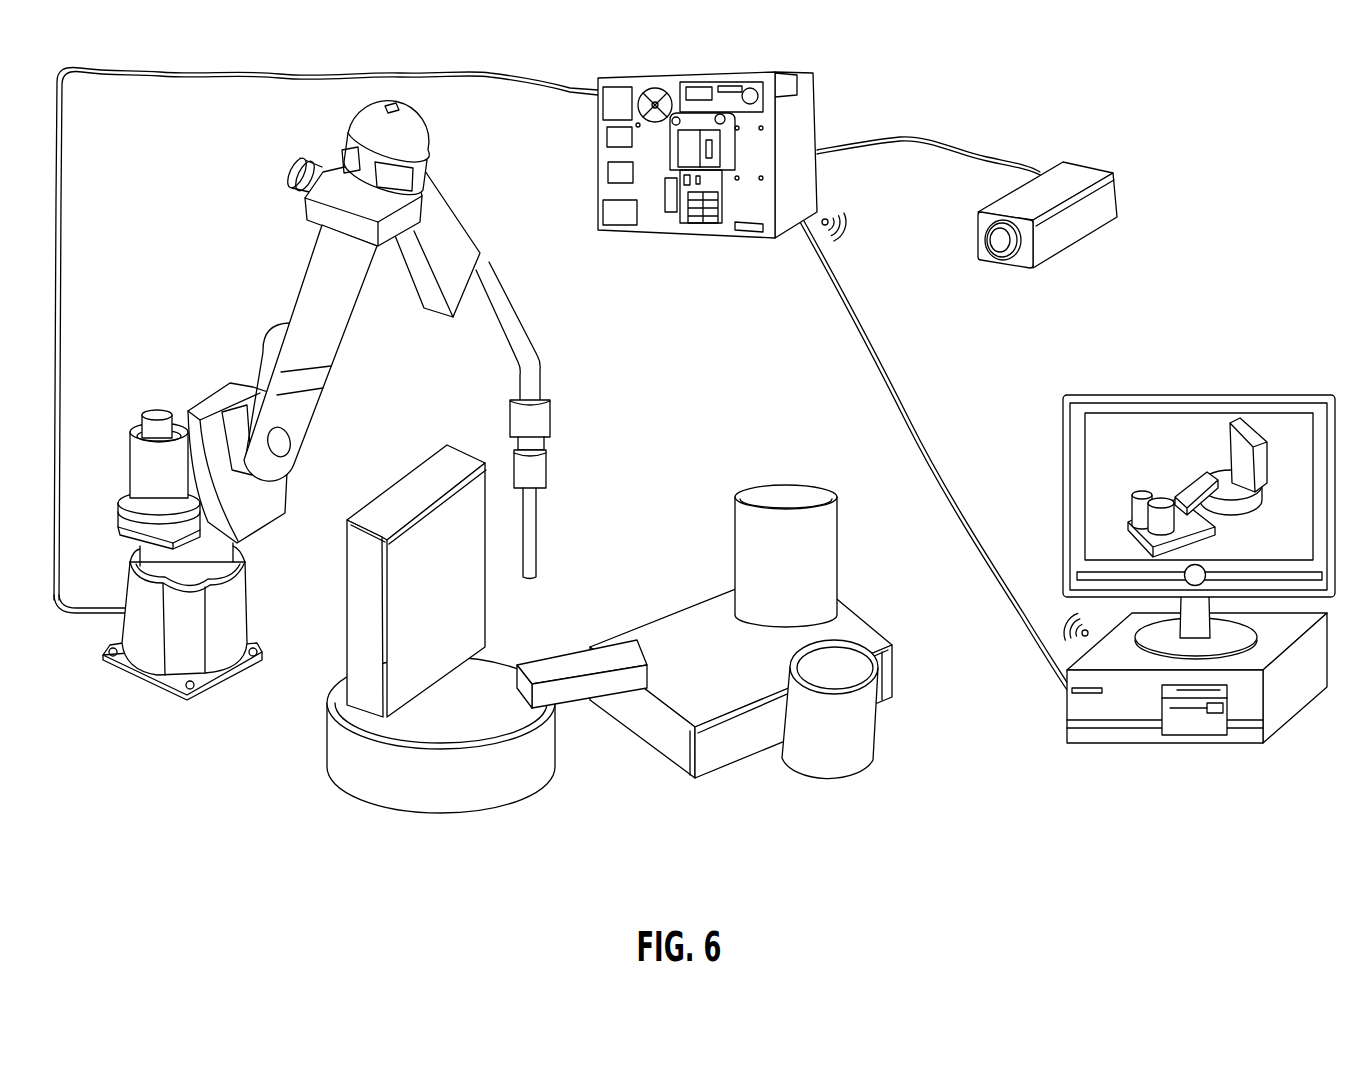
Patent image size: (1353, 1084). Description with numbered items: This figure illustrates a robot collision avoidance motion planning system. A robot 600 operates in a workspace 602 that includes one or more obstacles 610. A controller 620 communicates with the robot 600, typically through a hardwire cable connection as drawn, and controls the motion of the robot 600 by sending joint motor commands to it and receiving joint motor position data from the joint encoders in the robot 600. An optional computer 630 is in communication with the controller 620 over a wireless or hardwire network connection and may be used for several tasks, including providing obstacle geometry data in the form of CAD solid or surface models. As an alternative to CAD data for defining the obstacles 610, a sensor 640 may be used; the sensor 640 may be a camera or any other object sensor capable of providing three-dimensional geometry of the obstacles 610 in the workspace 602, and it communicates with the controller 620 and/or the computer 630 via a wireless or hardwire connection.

The robot 600 is at (450, 176).
The workspace 602 is at (490, 509).
The obstacles 610 is at (698, 539).
The controller 620 is at (687, 76).
The computer 630 is at (1264, 355).
The sensor 640 is at (1087, 163).